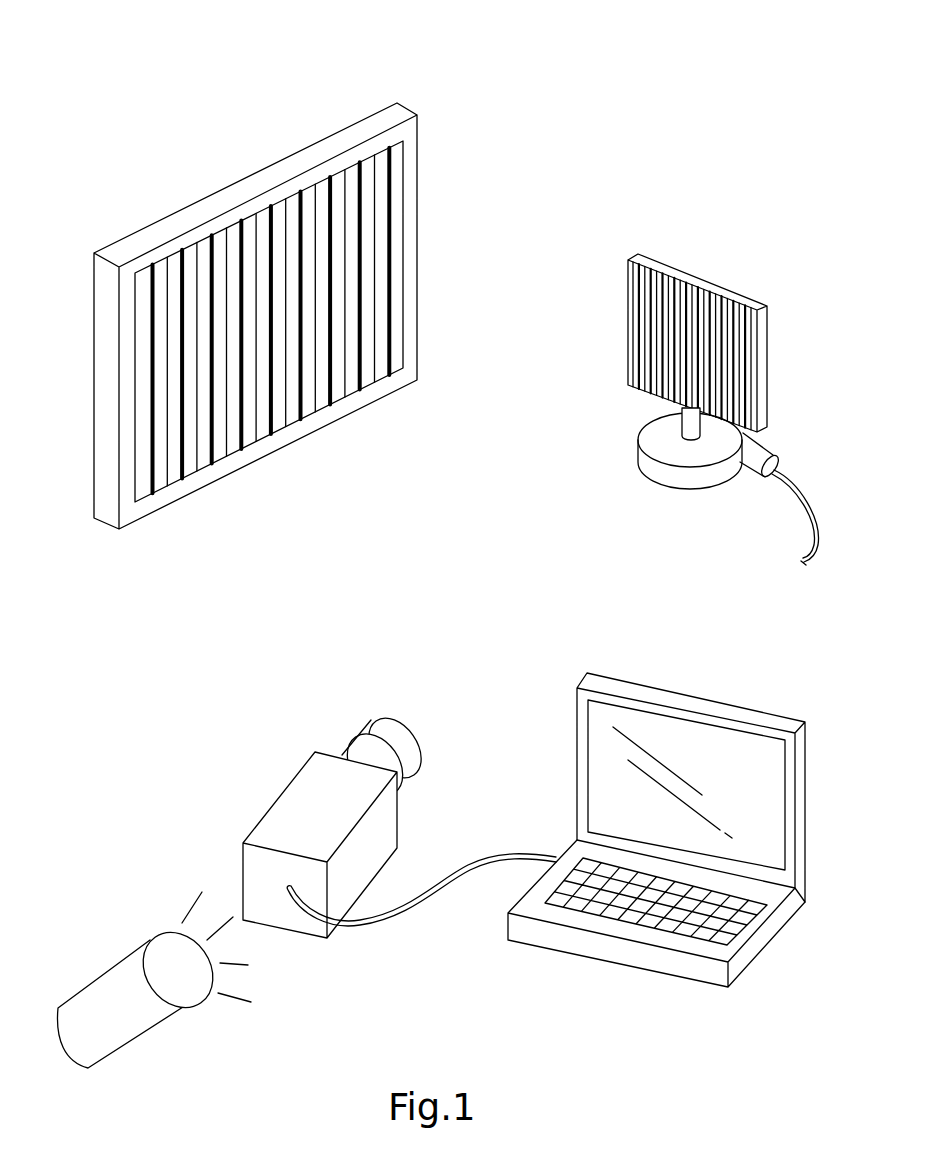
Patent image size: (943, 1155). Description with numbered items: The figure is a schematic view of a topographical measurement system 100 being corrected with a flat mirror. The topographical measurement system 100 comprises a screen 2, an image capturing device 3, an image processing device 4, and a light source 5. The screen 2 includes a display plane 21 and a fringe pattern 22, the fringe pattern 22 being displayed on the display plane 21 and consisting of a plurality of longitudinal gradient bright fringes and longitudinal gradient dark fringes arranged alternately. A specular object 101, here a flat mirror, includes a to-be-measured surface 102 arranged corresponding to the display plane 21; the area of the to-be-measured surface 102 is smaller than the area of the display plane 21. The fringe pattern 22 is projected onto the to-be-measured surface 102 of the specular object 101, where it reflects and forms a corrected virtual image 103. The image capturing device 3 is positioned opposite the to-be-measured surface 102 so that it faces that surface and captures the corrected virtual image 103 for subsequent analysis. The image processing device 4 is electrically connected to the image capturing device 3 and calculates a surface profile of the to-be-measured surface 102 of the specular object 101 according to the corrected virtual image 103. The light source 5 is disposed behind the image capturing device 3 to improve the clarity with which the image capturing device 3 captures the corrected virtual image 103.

The topographical measurement system 100 is at (137, 68).
The screen 2 is at (113, 229).
The display plane 21 is at (410, 180).
The fringe pattern 22 is at (348, 178).
The specular object 101 is at (726, 272).
The to-be-measured surface 102 is at (757, 373).
The corrected virtual image 103 is at (648, 280).
The image capturing device 3 is at (397, 817).
The image processing device 4 is at (680, 697).
The light source 5 is at (130, 953).